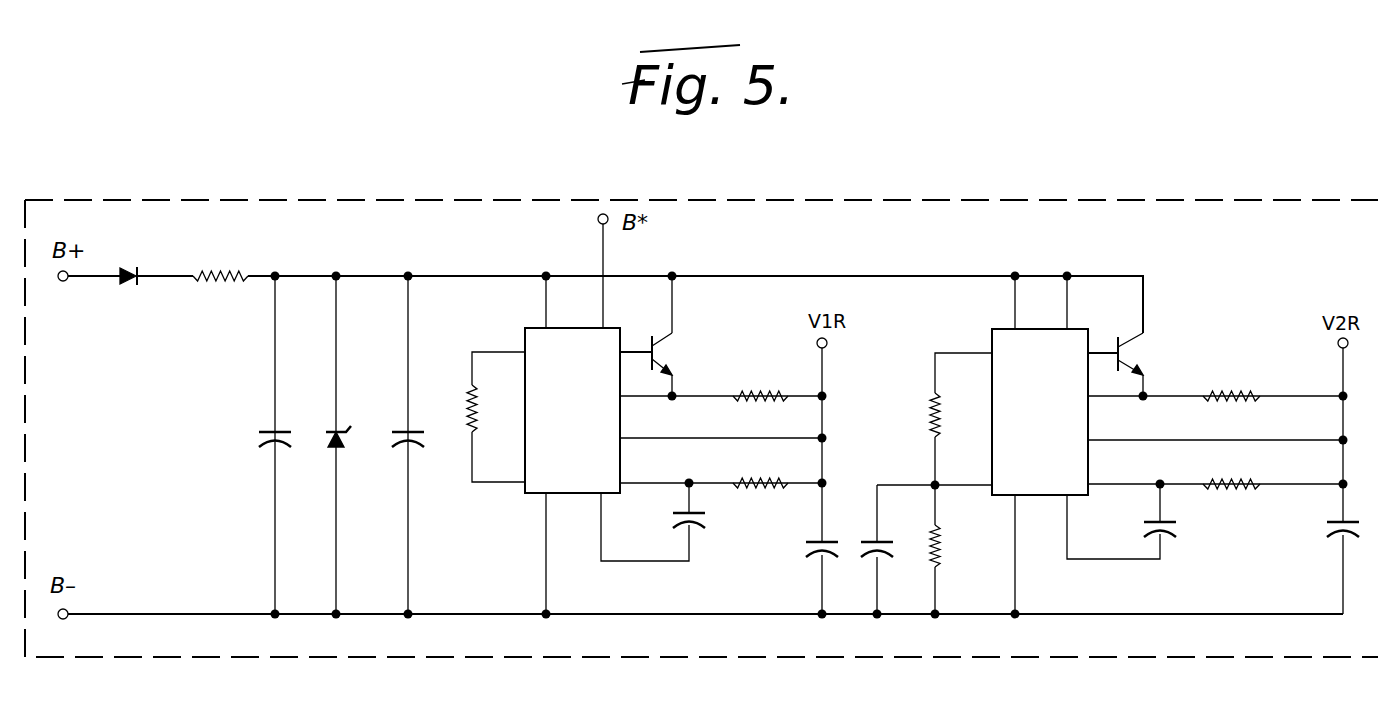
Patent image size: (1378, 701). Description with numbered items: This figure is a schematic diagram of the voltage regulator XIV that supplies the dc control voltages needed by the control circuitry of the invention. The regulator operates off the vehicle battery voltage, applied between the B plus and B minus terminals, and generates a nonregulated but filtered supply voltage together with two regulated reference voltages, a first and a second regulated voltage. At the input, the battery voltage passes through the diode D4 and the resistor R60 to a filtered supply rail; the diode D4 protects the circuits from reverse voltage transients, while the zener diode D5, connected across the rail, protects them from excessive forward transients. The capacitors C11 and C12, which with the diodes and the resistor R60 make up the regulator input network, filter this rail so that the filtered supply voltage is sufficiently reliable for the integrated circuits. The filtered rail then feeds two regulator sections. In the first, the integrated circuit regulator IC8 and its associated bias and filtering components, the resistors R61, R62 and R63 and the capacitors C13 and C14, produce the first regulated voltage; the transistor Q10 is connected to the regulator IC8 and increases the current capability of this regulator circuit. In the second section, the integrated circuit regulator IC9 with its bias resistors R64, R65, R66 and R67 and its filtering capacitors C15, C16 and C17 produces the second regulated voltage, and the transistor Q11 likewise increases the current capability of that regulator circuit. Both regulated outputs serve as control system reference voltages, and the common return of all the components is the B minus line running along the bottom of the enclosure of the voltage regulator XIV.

The voltage regulator XIV is at (1170, 235).
The diode D4 is at (125, 292).
The resistor R60 is at (220, 263).
The capacitor C11 is at (258, 440).
The zener diode D5 is at (326, 442).
The capacitor C12 is at (394, 440).
The resistor R61 is at (466, 405).
The integrated circuit regulator IC8 is at (572, 410).
The transistor Q10 is at (666, 352).
The resistor R62 is at (760, 384).
The resistor R63 is at (760, 471).
The capacitor C13 is at (708, 521).
The capacitor C14 is at (808, 548).
The capacitor C15 is at (862, 547).
The resistor R64 is at (930, 404).
The resistor R65 is at (957, 549).
The integrated circuit regulator IC9 is at (1040, 412).
The transistor Q11 is at (1134, 363).
The resistor R66 is at (1231, 383).
The resistor R67 is at (1231, 471).
The capacitor C16 is at (1180, 530).
The capacitor C17 is at (1322, 532).